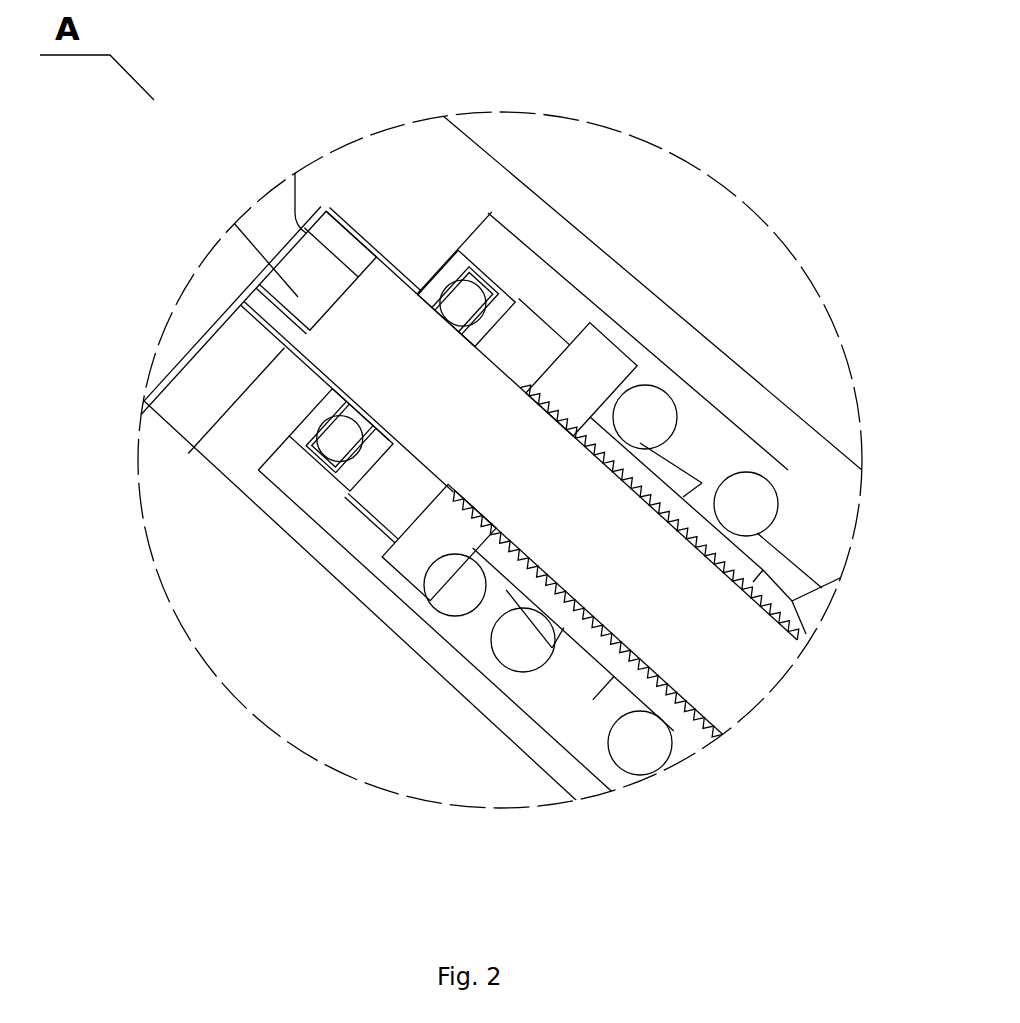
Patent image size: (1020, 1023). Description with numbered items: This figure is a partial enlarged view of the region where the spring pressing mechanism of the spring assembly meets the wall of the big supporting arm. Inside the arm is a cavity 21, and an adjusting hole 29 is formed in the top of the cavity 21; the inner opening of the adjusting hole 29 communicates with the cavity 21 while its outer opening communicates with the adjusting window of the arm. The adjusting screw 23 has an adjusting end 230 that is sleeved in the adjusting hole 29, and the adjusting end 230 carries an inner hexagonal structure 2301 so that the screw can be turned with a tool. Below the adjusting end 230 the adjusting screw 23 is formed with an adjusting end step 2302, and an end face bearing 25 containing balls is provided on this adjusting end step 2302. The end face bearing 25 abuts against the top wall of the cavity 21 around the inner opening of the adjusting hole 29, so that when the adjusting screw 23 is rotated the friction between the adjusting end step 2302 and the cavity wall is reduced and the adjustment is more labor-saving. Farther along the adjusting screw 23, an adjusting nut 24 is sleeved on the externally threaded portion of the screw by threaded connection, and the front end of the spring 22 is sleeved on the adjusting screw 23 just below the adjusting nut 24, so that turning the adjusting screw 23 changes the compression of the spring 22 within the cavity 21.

The cavity 21 is at (503, 491).
The spring 22 is at (757, 420).
The adjusting screw 23 is at (651, 595).
The adjusting nut 24 is at (396, 667).
The end face bearing 25 is at (276, 444).
The adjusting hole 29 is at (251, 390).
The adjusting end 230 is at (425, 257).
The inner hexagonal structure 2301 is at (243, 232).
The adjusting end step 2302 is at (601, 331).